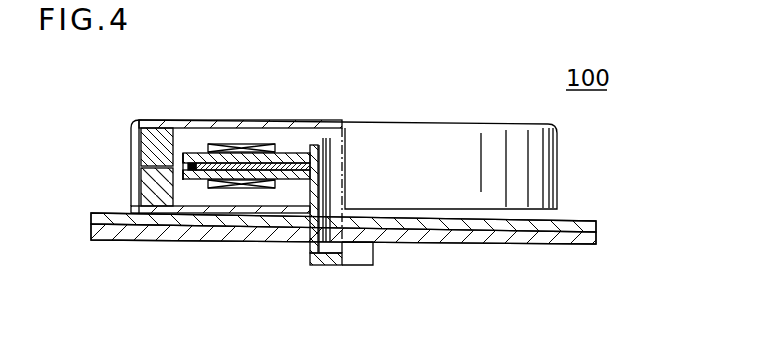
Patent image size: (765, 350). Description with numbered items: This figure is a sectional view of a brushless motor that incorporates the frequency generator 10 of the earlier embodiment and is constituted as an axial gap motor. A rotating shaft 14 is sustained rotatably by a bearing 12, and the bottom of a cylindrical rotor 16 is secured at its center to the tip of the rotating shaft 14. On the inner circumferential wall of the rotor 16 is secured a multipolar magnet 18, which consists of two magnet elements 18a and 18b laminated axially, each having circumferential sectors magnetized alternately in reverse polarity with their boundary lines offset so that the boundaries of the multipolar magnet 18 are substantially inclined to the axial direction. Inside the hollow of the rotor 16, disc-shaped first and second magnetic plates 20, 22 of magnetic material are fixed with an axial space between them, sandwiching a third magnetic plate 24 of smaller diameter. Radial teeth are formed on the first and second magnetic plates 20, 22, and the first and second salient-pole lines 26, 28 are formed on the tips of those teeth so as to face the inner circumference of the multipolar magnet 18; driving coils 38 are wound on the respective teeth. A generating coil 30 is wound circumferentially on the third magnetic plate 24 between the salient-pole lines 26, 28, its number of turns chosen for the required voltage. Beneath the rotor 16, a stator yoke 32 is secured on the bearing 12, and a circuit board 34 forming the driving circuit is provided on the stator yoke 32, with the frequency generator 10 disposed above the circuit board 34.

The frequency generator 10 is at (566, 172).
The bearing 12 is at (313, 266).
The rotating shaft 14 is at (336, 157).
The rotor 16 is at (466, 140).
The multipolar magnet 18 is at (144, 129).
The magnet element 18a is at (158, 150).
The magnet element 18b is at (150, 198).
The first magnetic plate 20 is at (314, 146).
The second magnetic plate 22 is at (286, 180).
The third magnetic plate 24 is at (283, 160).
The first salient-pole line 26 is at (188, 140).
The second salient-pole line 28 is at (186, 196).
The generating coil 30 is at (188, 166).
The stator yoke 32 is at (148, 241).
The circuit board 34 is at (93, 214).
The driving coil 38 is at (262, 144).